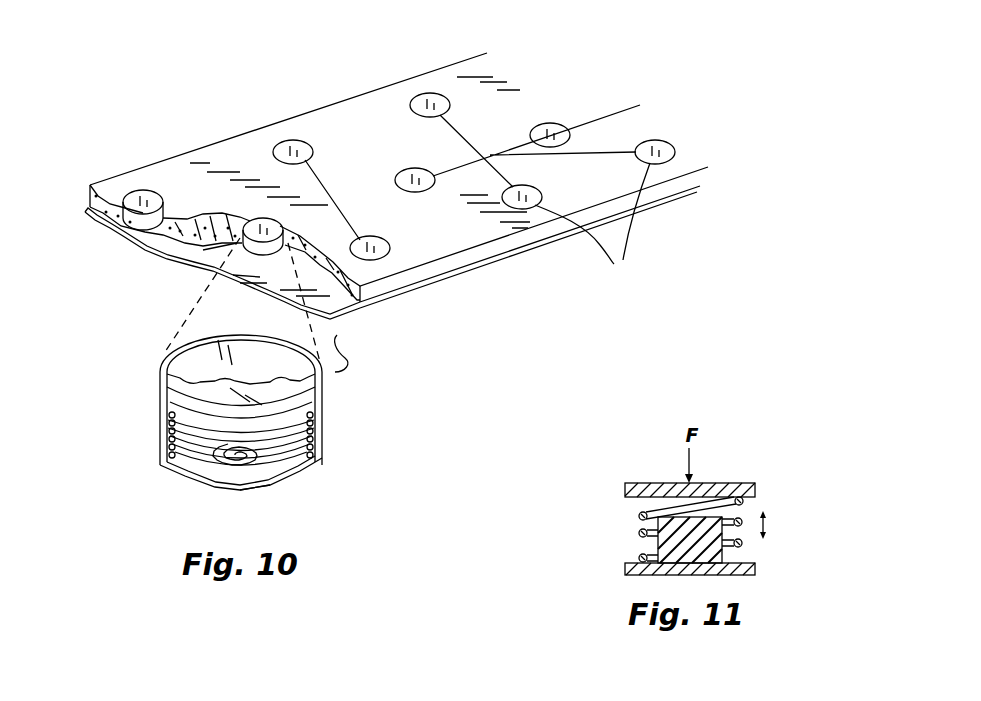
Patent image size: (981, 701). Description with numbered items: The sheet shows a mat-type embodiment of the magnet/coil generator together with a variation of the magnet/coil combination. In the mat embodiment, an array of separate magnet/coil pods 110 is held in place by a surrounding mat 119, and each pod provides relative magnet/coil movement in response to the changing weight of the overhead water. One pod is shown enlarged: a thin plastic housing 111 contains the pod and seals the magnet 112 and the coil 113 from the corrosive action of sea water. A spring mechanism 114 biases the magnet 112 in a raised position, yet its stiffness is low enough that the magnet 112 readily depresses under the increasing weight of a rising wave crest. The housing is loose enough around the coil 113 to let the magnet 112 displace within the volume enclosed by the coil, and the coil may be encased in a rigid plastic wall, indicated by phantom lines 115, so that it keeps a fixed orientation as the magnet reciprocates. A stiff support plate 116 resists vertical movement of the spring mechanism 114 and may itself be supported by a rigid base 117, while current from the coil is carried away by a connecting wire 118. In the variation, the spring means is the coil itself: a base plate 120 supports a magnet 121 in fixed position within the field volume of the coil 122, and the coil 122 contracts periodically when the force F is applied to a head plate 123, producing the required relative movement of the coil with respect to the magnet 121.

In FIG. 10, the magnet/coil pods 110 is at (120, 342).
In FIG. 10, the thin plastic housing 111 is at (183, 359).
In FIG. 10, the magnet 112 is at (163, 438).
In FIG. 10, the coil 113 is at (323, 421).
In FIG. 10, the spring mechanism 114 is at (290, 483).
In FIG. 10, the phantom lines 115 is at (194, 475).
In FIG. 10, the stiff support plate 116 is at (272, 478).
In FIG. 10, the rigid base 117 is at (160, 243).
In FIG. 10, the connecting wire 118 is at (330, 174).
In FIG. 10, the surrounding mat 119 is at (237, 147).
In FIG. 11, the base plate 120 is at (743, 562).
In FIG. 11, the magnet 121 is at (650, 525).
In FIG. 11, the coil 122 is at (753, 500).
In FIG. 11, the head plate 123 is at (722, 483).